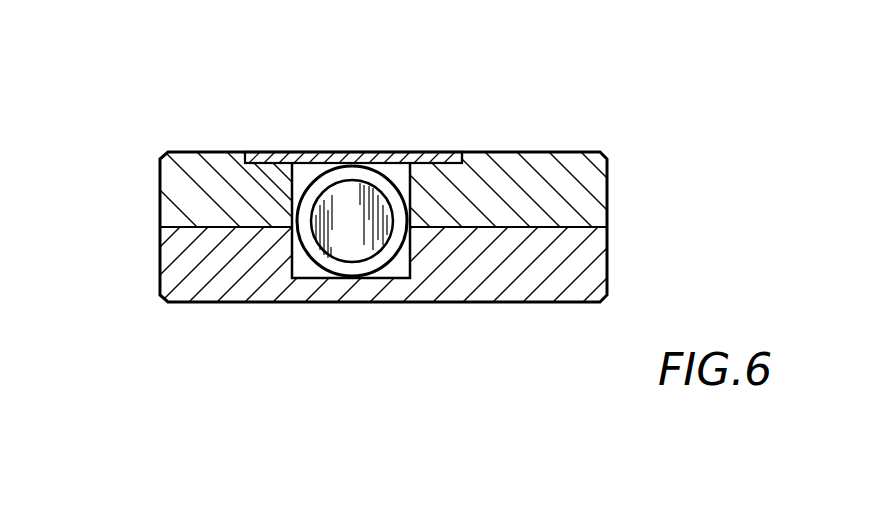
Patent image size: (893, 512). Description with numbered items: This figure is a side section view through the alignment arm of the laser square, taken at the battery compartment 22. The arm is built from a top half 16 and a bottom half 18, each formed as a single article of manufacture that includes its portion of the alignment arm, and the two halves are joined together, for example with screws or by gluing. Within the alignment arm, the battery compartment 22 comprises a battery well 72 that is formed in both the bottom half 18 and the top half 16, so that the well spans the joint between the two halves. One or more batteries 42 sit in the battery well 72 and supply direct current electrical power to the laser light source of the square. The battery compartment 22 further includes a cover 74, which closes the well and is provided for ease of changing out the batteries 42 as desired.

The top half 16 is at (182, 190).
The bottom half 18 is at (180, 265).
The battery compartment 22 is at (329, 150).
The cover 74 is at (437, 152).
The battery well 72 is at (295, 264).
The batteries 42 is at (363, 243).